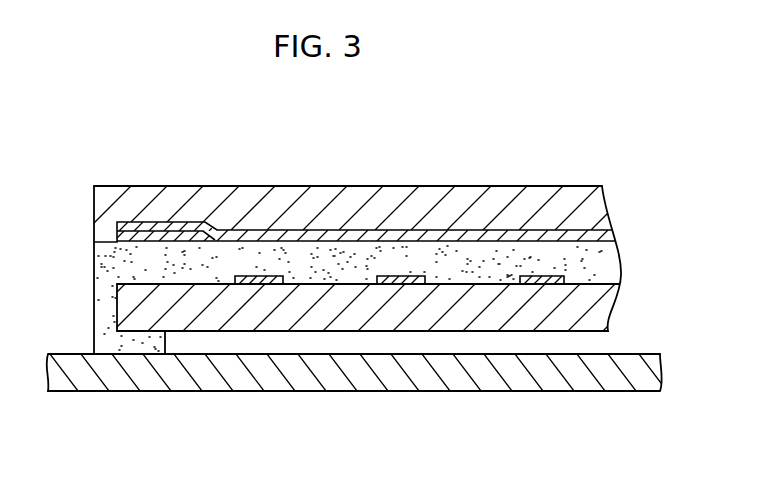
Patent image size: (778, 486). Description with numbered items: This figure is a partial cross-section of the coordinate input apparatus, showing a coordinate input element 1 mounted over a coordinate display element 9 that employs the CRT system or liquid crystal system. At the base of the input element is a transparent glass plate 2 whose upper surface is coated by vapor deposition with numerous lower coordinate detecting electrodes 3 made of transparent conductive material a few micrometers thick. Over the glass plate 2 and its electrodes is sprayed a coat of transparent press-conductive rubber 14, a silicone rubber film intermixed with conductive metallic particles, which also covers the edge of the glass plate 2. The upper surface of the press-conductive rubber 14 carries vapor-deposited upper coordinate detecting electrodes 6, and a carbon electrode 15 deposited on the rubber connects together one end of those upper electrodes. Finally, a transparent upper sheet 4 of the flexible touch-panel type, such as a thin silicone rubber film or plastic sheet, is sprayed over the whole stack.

The coordinate input element 1 is at (50, 345).
The transparent glass plate 2 is at (609, 303).
The lower coordinate detecting electrodes 3 is at (541, 276).
The transparent upper sheet 4 is at (372, 185).
The upper coordinate detecting electrodes 6 is at (478, 230).
The coordinate display element 9 is at (556, 392).
The transparent press-conductive rubber 14 is at (601, 257).
The carbon electrode 15 is at (118, 241).